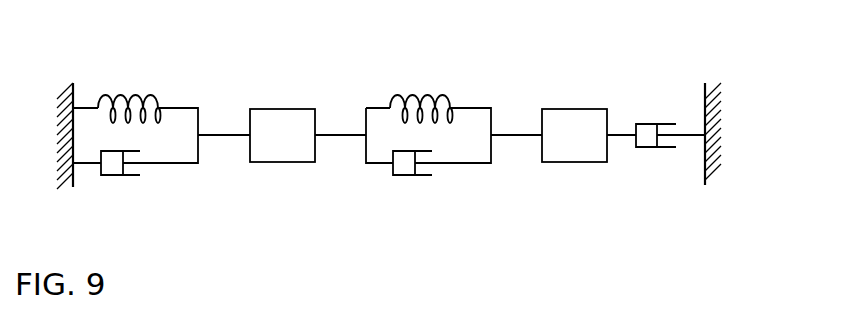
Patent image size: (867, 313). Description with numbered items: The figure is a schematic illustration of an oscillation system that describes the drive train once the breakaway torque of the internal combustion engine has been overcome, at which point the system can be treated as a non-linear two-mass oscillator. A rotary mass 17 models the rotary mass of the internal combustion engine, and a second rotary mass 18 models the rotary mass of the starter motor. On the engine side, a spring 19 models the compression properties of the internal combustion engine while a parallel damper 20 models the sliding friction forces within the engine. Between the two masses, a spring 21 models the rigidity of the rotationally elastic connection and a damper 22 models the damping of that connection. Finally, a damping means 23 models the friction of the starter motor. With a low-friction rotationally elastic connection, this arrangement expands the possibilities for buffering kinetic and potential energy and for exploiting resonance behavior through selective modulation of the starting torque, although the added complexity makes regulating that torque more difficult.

The rotary mass 17 is at (282, 110).
The rotary mass 18 is at (569, 110).
The spring 19 is at (148, 97).
The damper 20 is at (113, 170).
The spring 21 is at (428, 97).
The damper 22 is at (405, 170).
The damping means 23 is at (647, 137).